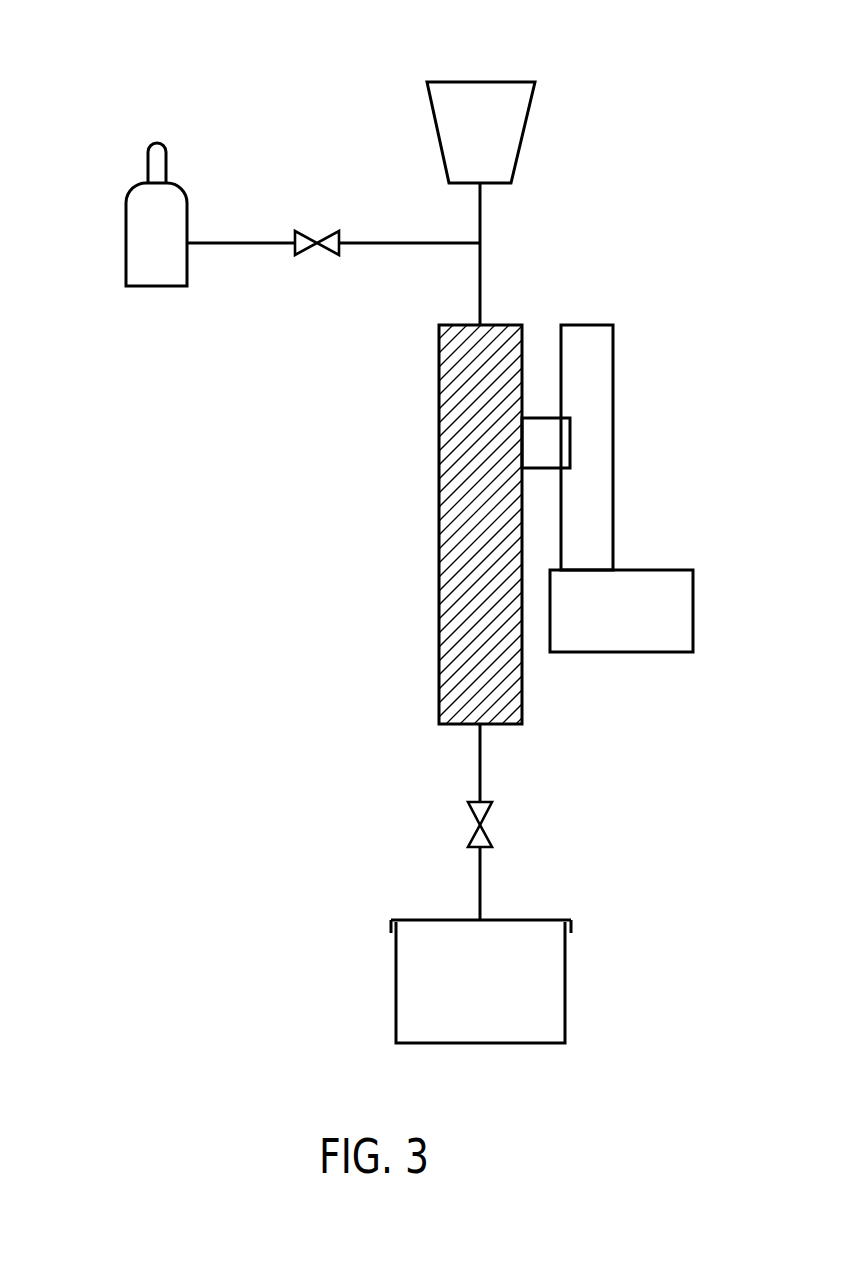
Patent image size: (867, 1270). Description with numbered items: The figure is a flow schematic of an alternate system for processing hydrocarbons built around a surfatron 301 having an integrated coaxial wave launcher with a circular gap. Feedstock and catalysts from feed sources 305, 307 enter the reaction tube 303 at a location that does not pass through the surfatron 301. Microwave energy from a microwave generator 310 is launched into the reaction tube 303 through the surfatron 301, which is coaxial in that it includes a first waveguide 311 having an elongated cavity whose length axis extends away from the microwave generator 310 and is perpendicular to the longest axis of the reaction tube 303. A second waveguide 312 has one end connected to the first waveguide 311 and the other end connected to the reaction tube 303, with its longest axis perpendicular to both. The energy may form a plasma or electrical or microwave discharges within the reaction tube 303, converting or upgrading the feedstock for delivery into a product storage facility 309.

The surfatron 301 is at (690, 445).
The reaction tube 303 is at (458, 724).
The feed source 305 is at (478, 82).
The feed source 307 is at (126, 238).
The product storage facility 309 is at (396, 990).
The microwave generator 310 is at (638, 652).
The first waveguide 311 is at (577, 325).
The second waveguide 312 is at (533, 418).